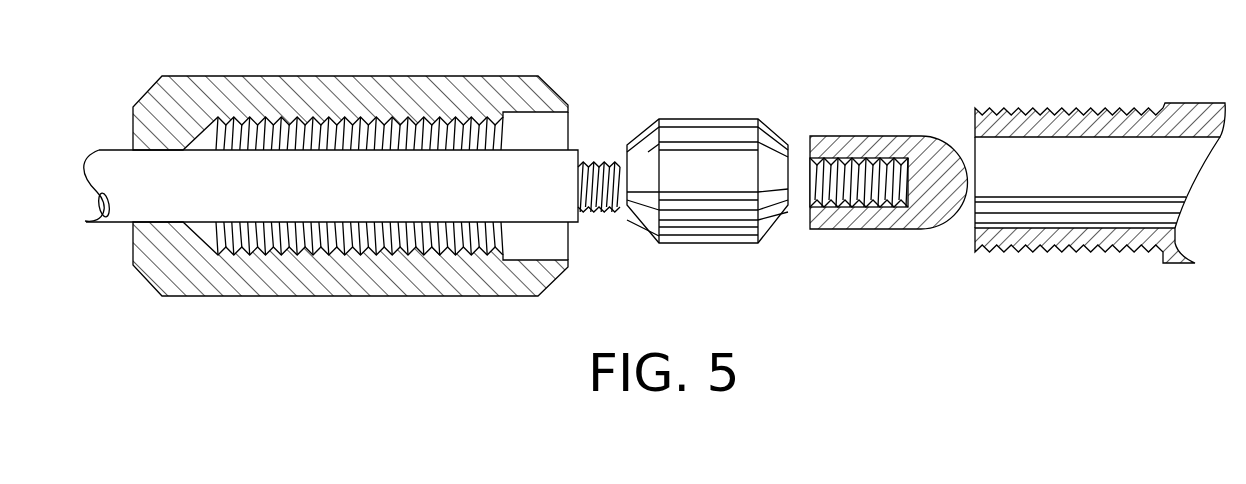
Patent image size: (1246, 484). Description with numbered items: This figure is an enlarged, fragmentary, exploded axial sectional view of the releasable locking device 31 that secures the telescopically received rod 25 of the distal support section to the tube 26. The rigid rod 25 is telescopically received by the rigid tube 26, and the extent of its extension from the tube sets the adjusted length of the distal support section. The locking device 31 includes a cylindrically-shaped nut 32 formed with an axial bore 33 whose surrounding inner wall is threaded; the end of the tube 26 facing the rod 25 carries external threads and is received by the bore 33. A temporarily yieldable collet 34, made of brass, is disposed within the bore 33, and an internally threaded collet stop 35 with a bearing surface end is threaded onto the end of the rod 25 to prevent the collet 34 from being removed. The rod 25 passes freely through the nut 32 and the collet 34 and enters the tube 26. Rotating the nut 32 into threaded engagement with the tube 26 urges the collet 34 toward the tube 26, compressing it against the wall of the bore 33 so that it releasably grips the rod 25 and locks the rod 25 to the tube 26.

The rod 25 is at (116, 165).
The tube 26 is at (1048, 110).
The releasable locking device 31 is at (797, 120).
The nut 32 is at (345, 97).
The axial bore 33 is at (228, 130).
The collet 34 is at (710, 232).
The collet stop 35 is at (905, 222).